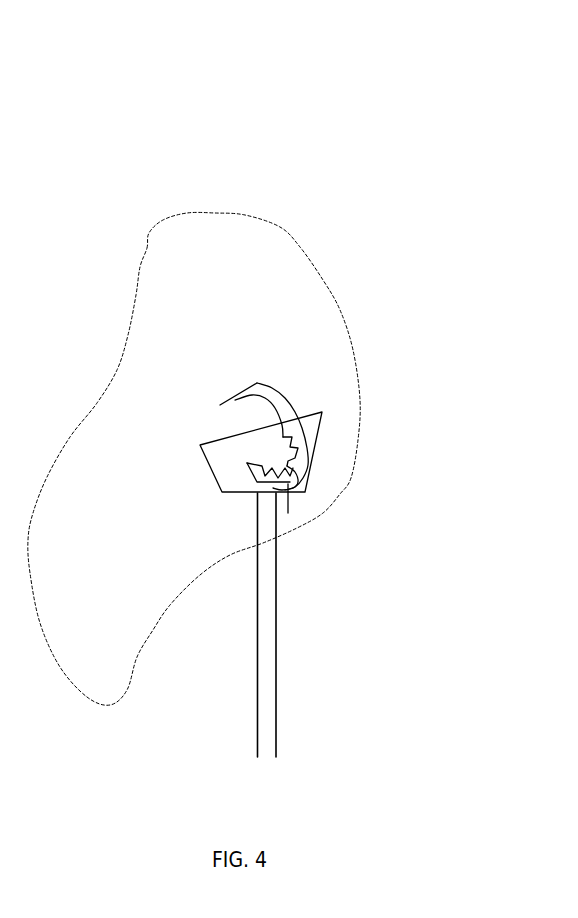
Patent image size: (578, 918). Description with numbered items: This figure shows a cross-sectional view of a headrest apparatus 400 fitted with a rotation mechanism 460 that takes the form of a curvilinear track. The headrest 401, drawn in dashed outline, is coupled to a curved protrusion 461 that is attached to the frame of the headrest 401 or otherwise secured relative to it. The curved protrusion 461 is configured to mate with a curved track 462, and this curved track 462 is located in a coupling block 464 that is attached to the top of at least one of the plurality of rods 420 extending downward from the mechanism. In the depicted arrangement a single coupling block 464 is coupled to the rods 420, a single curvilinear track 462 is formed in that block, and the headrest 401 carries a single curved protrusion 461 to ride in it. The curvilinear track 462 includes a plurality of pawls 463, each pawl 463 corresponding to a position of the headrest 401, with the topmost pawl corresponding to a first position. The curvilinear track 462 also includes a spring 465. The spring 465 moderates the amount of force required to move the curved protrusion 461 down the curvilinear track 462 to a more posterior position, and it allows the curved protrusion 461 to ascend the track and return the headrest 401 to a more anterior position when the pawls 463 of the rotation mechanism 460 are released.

The headrest apparatus 400 is at (210, 133).
The headrest 401 is at (277, 258).
The rods 420 is at (277, 605).
The rotation mechanism 460 is at (208, 366).
The curved protrusion 461 is at (252, 388).
The curved track 462 is at (302, 416).
The pawls 463 is at (294, 447).
The coupling block 464 is at (300, 490).
The spring 465 is at (288, 513).